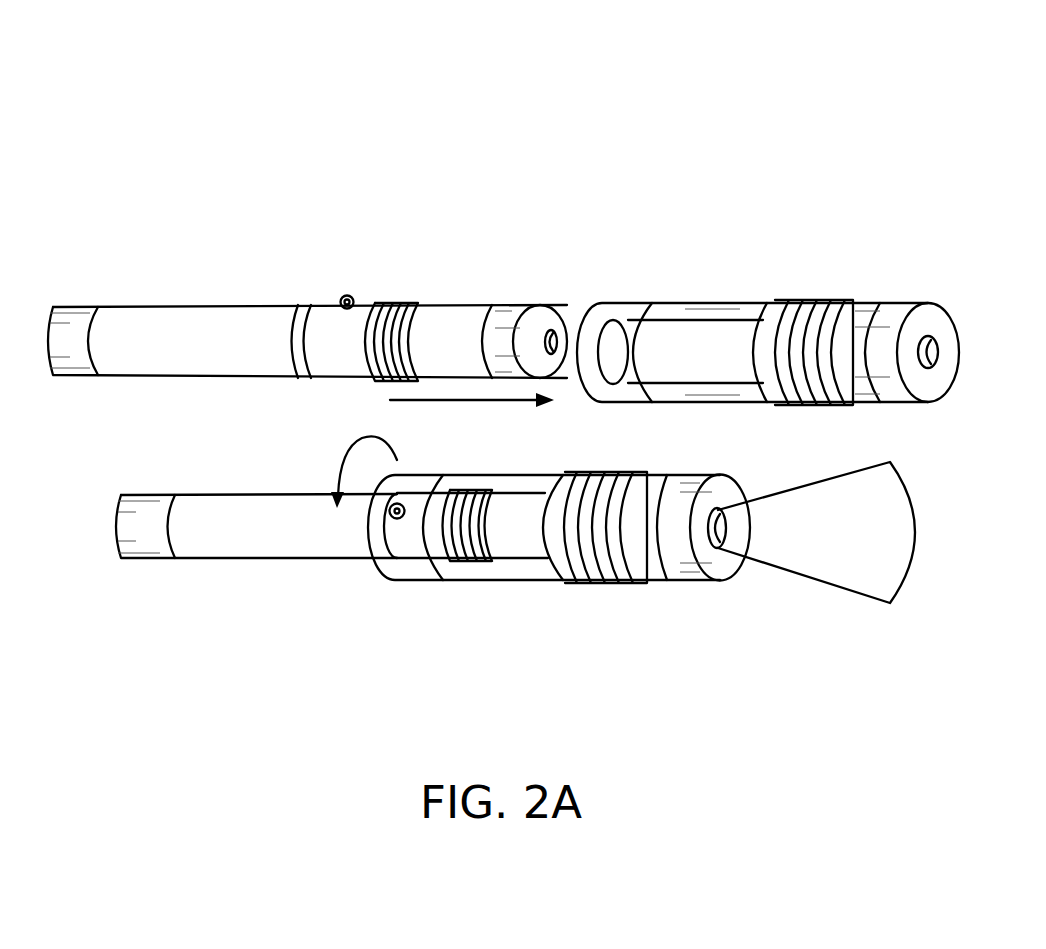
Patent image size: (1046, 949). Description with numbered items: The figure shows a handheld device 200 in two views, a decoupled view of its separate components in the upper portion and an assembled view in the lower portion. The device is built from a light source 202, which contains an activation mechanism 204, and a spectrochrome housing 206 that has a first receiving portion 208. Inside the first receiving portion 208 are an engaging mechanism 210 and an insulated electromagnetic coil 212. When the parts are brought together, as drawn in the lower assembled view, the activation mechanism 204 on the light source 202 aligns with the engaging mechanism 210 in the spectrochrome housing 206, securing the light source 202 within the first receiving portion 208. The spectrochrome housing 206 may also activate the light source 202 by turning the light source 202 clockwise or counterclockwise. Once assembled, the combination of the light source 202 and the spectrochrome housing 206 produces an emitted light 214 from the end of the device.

The handheld device 200 is at (379, 76).
The light source 202 is at (188, 327).
The activation mechanism 204 is at (347, 295).
The spectrochrome housing 206 is at (663, 376).
The first receiving portion 208 is at (683, 352).
The engaging mechanism 210 is at (607, 322).
The insulated electromagnetic coil 212 is at (817, 305).
The emitted light 214 is at (777, 557).